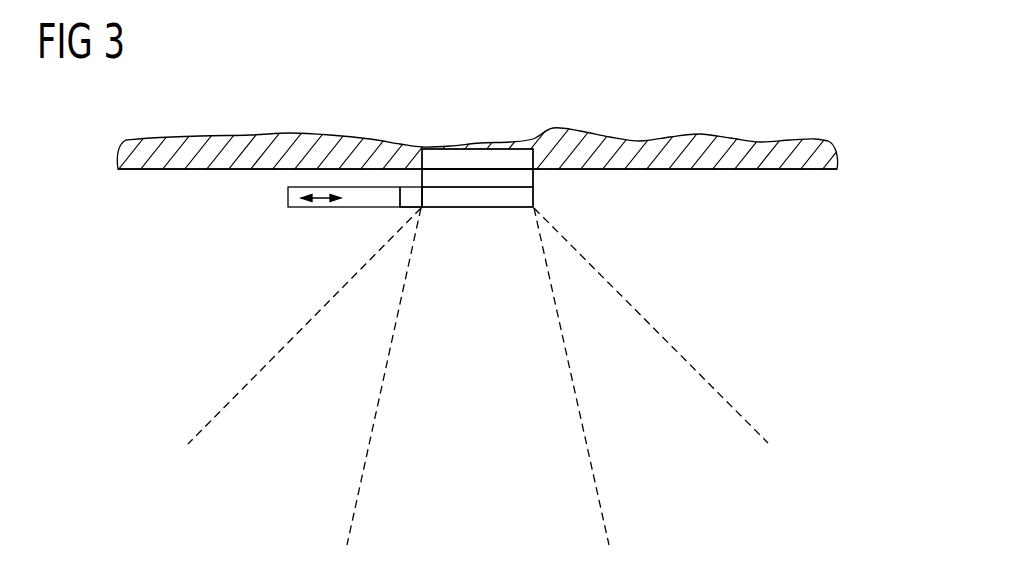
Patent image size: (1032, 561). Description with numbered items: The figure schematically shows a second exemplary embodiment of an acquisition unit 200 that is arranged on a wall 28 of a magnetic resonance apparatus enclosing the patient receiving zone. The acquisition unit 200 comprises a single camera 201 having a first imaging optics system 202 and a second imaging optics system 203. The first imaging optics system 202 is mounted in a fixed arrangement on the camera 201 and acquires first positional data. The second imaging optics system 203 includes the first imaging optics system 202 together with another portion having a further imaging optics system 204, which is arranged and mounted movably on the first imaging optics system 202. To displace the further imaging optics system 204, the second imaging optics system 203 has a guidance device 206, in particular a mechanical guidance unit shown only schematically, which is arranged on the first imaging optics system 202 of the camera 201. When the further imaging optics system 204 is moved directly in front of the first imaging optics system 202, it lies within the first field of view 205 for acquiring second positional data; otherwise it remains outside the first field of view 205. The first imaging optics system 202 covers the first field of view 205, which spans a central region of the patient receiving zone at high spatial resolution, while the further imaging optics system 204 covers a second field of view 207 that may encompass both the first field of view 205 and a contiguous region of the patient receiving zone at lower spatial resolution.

The wall 28 is at (693, 156).
The acquisition unit 200 is at (481, 145).
The camera 201 is at (505, 157).
The first imaging optics system 202 is at (452, 178).
The second imaging optics system 203 is at (412, 212).
The further imaging optics system 204 is at (357, 200).
The first field of view 205 is at (562, 337).
The guidance device 206 is at (520, 196).
The second field of view 207 is at (682, 358).